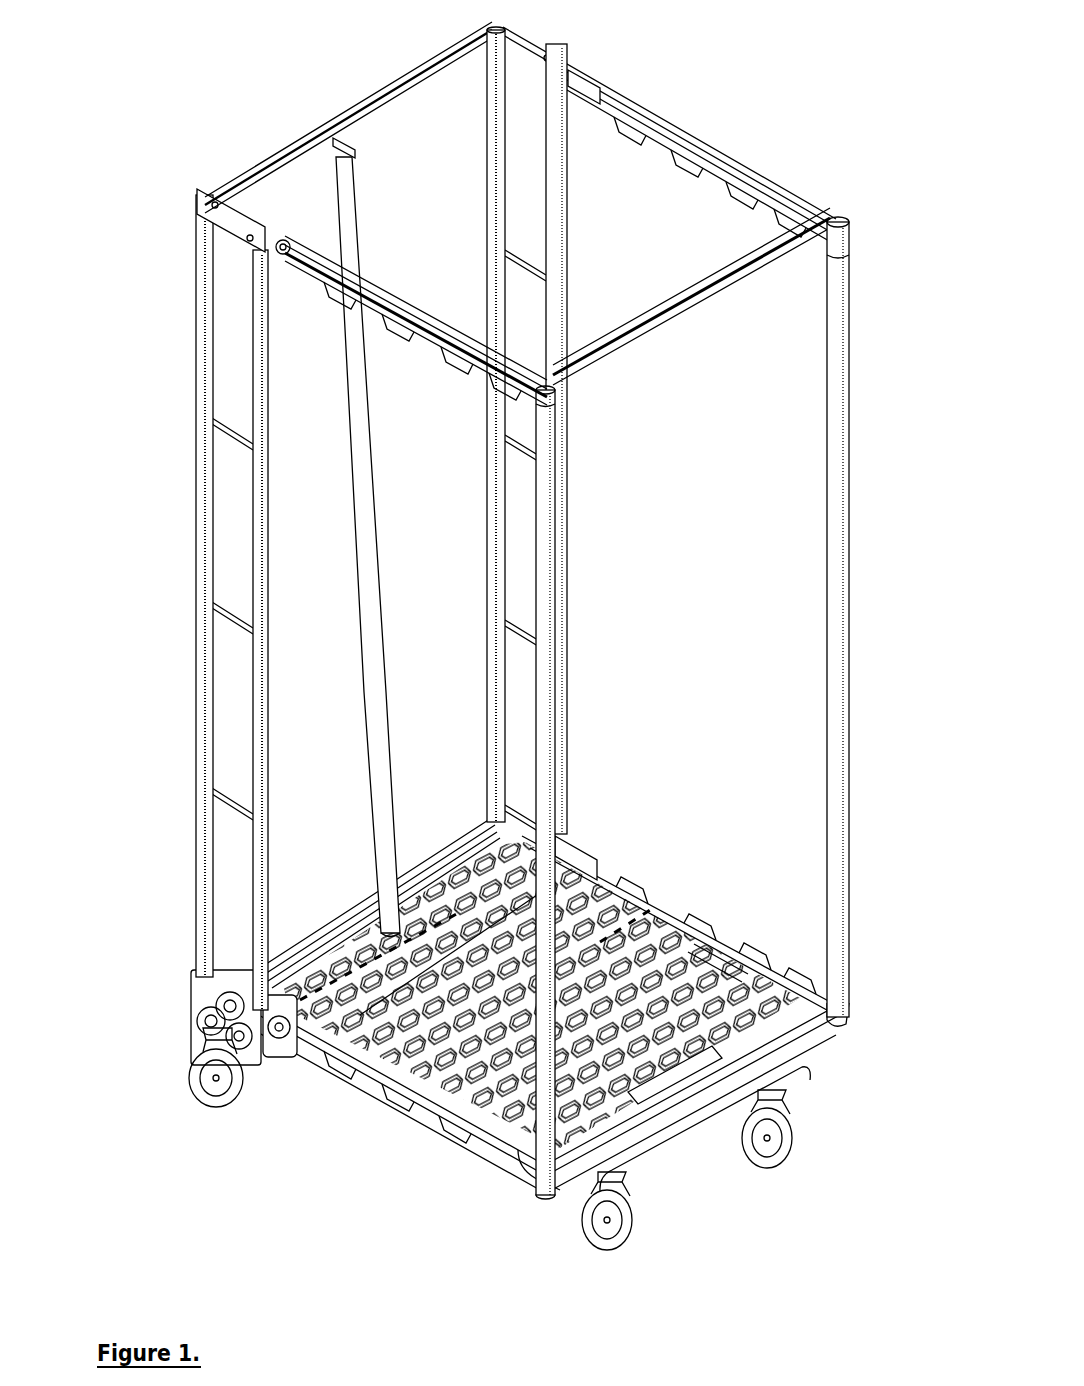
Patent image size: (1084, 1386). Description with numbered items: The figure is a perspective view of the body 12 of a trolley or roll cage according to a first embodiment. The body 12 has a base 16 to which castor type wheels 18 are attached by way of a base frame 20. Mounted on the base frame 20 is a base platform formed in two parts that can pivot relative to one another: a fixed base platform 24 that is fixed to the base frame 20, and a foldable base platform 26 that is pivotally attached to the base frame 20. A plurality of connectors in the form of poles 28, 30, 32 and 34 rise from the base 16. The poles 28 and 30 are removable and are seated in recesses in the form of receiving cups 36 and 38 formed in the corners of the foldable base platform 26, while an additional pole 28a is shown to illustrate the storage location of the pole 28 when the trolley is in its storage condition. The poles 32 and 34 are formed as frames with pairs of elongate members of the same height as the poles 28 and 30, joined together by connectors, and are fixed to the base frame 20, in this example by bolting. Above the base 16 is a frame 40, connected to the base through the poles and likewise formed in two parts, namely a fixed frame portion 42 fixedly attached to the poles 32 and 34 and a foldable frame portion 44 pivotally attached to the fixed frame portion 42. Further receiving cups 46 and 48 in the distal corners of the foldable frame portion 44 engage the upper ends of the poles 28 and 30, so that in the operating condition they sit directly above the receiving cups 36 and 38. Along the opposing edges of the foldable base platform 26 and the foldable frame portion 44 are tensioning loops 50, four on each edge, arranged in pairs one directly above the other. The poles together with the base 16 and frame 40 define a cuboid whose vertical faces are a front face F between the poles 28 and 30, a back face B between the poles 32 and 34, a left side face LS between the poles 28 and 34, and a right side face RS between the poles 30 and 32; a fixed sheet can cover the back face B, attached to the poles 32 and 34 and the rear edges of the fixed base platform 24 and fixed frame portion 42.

The body 12 is at (730, 1222).
The base 16 is at (445, 1175).
The wheels 18 is at (230, 1053).
The base frame 20 is at (718, 1128).
The fixed base platform 24 is at (298, 996).
The foldable base platform 26 is at (777, 1010).
The pole 28 is at (543, 1167).
The additional pole 28a is at (384, 836).
The pole 30 is at (840, 906).
The pole 32 is at (490, 100).
The pole 34 is at (263, 372).
The receiving cup 36 is at (546, 1202).
The receiving cup 38 is at (843, 1018).
The frame 40 is at (297, 143).
The fixed frame portion 42 is at (233, 177).
The foldable frame portion 44 is at (626, 342).
The receiving cup 46 is at (546, 412).
The receiving cup 48 is at (840, 230).
The tensioning loops 50 is at (340, 1070).
The back face B is at (420, 127).
The right side face RS is at (600, 165).
The left side face LS is at (300, 570).
The front face F is at (793, 368).